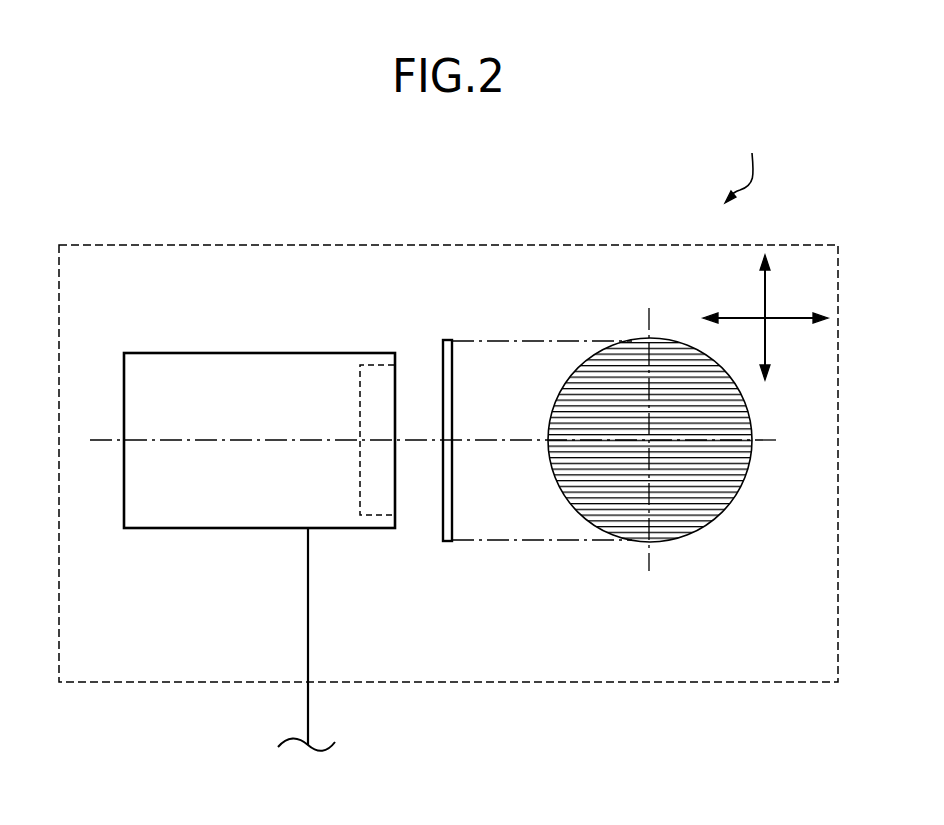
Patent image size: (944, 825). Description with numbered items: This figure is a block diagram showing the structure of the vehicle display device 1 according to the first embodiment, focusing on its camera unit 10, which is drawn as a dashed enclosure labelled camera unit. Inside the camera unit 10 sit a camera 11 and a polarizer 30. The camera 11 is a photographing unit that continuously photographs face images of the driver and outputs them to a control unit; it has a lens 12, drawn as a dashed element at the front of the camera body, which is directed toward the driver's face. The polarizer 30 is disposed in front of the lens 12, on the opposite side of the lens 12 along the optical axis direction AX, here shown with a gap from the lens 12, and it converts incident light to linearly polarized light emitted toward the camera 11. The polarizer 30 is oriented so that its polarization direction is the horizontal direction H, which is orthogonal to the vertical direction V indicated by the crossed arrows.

The vehicle display device 1 is at (742, 167).
The camera unit 10 is at (665, 245).
The camera 11 is at (162, 353).
The lens 12 is at (380, 365).
The polarizer 30 is at (600, 350).
The optical axis direction AX is at (427, 442).
The vertical direction V is at (765, 294).
The horizontal direction H is at (788, 318).